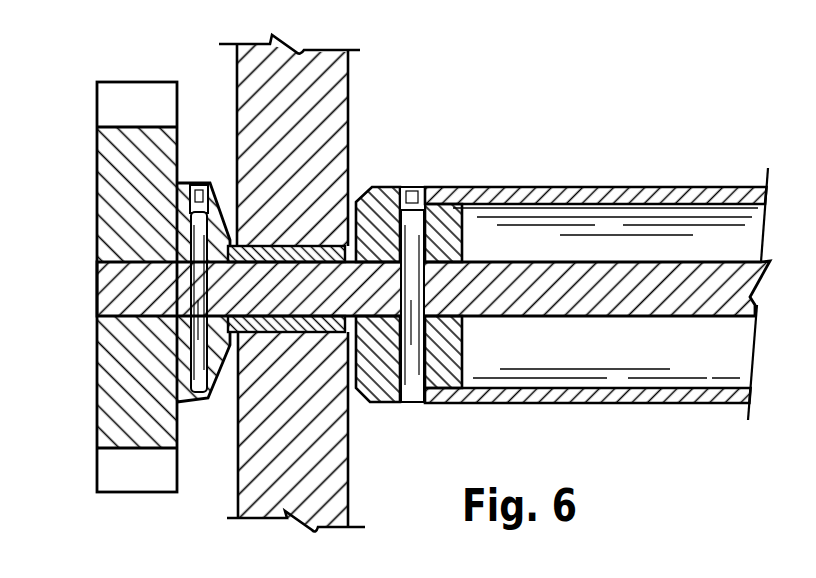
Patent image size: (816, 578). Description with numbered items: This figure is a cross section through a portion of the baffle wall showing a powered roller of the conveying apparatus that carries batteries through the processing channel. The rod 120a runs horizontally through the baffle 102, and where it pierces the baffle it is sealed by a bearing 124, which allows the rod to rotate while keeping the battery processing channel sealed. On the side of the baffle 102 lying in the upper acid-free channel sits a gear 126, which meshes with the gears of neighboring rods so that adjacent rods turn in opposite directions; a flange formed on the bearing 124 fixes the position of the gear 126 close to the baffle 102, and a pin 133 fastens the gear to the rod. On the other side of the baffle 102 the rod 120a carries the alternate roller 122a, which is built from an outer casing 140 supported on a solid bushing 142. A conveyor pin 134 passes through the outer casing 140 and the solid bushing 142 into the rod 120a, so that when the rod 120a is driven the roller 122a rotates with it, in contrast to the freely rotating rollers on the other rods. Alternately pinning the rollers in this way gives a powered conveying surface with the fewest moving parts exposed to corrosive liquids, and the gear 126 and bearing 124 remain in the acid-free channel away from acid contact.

The baffle 102 is at (343, 100).
The alternate rod 120a is at (105, 290).
The alternate roller 122a is at (636, 196).
The bearing 124 is at (232, 243).
The gear 126 is at (130, 97).
The pin 133 is at (197, 393).
The conveyor pin 134 is at (412, 400).
The outer casing 140 is at (518, 198).
The solid bushing 142 is at (372, 197).